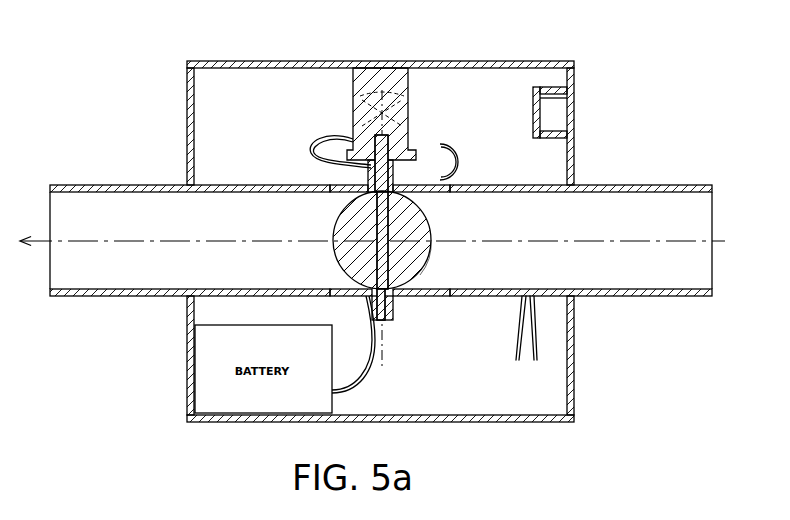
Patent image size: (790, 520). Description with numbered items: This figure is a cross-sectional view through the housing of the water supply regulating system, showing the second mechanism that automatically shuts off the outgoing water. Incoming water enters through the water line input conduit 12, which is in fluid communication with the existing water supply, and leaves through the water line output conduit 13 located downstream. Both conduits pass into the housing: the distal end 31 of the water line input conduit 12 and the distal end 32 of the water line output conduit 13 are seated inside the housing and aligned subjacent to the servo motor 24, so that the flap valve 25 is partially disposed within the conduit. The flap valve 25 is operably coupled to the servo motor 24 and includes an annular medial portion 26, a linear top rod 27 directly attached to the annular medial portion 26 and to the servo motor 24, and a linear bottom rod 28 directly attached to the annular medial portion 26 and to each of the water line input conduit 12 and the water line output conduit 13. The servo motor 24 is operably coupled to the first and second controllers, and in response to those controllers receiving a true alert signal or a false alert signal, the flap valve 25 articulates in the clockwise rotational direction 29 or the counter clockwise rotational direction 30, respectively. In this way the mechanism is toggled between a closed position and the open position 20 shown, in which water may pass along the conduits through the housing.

The water line input conduit 12 is at (634, 171).
The water line output conduit 13 is at (112, 175).
The open position 20 is at (311, 205).
The servo motor 24 is at (360, 82).
The flap valve 25 is at (448, 274).
The annular medial portion 26 is at (418, 213).
The linear top rod 27 is at (386, 152).
The linear bottom rod 28 is at (386, 305).
The clockwise rotational direction 29 is at (401, 102).
The counter clockwise rotational direction 30 is at (401, 102).
The distal end of the water line input conduit 31 is at (394, 177).
The distal end of the water line output conduit 32 is at (377, 301).